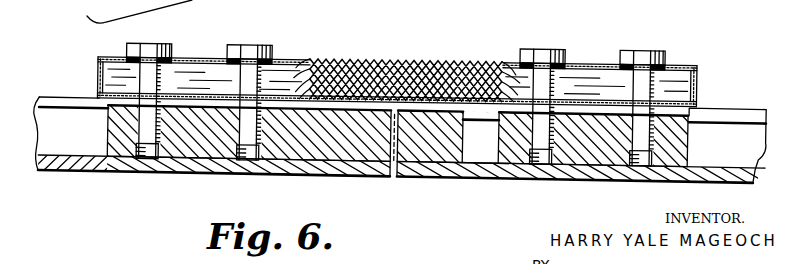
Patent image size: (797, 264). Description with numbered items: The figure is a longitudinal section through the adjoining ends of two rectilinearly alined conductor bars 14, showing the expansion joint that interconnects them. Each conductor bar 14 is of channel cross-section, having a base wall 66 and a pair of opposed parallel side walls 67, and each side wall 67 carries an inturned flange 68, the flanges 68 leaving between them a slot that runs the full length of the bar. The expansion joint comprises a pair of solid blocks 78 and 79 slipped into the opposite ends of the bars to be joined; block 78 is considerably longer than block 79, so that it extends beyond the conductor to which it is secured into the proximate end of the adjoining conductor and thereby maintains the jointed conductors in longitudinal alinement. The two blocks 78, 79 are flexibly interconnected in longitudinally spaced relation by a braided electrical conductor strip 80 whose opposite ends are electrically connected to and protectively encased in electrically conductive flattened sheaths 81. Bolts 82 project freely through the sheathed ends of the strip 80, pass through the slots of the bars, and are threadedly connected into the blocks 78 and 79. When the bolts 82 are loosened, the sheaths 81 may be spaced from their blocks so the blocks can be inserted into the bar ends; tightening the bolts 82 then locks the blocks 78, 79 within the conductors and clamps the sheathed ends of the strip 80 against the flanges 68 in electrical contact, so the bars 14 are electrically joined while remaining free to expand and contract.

The conductor bar 14 is at (726, 132).
The base wall 66 is at (66, 172).
The side wall 67 is at (55, 128).
The inturned flange 68 is at (64, 107).
The solid block 78 is at (310, 147).
The solid block 79 is at (582, 152).
The braided electrical conductor strip 80 is at (378, 61).
The sheath 81 is at (193, 57).
The bolt 82 is at (148, 52).